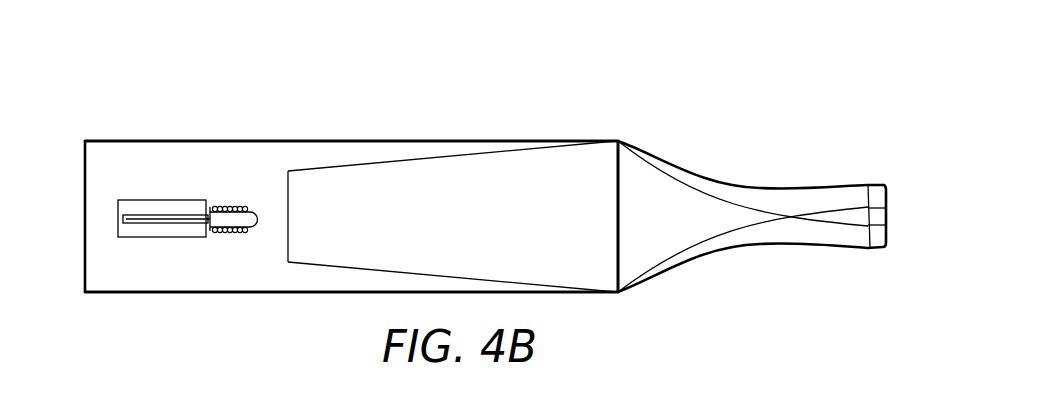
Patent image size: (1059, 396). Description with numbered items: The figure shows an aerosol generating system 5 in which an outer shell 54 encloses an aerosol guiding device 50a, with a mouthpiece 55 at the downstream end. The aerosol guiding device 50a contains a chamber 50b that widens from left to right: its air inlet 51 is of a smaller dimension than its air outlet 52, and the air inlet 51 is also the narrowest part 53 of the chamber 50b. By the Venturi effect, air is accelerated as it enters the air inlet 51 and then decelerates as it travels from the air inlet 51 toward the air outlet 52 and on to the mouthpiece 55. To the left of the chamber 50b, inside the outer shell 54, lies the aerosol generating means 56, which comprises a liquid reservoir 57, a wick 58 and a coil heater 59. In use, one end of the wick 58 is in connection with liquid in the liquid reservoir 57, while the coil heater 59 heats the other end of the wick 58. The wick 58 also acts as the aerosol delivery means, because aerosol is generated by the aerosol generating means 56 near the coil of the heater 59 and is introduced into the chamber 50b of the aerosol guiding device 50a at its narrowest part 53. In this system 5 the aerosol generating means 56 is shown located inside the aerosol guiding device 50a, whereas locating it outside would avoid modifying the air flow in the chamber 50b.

The aerosol generating system 5 is at (752, 90).
The aerosol guiding device 50a is at (338, 168).
The chamber 50b is at (340, 268).
The air inlet 51 is at (288, 250).
The air outlet 52 is at (618, 263).
The narrowest part 53 is at (290, 232).
The outer shell 54 is at (552, 140).
The mouthpiece 55 is at (823, 188).
The aerosol generating means 56 is at (186, 243).
The liquid reservoir 57 is at (128, 210).
The wick 58 is at (186, 220).
The coil heater 59 is at (224, 204).